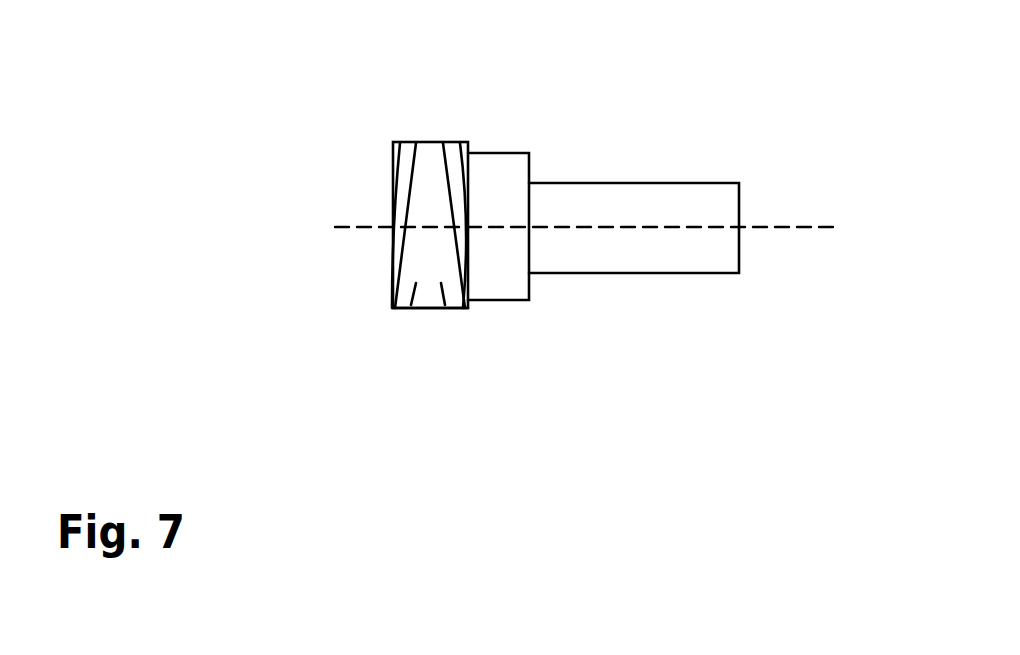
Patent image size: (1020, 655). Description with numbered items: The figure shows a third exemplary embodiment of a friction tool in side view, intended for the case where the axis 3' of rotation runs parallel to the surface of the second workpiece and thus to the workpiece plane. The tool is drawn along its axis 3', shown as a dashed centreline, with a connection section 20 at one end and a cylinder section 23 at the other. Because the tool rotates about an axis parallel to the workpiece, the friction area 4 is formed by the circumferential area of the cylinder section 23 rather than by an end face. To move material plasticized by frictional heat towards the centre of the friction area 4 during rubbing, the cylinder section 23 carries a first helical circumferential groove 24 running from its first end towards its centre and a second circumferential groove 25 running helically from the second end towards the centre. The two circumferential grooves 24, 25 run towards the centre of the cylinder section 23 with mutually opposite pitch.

The friction area 4 is at (430, 192).
The connection section 20 is at (600, 199).
The cylinder section 23 is at (427, 308).
The first helical circumferential groove 24 is at (403, 257).
The second circumferential groove 25 is at (455, 268).
The axis of rotation 3' is at (584, 329).